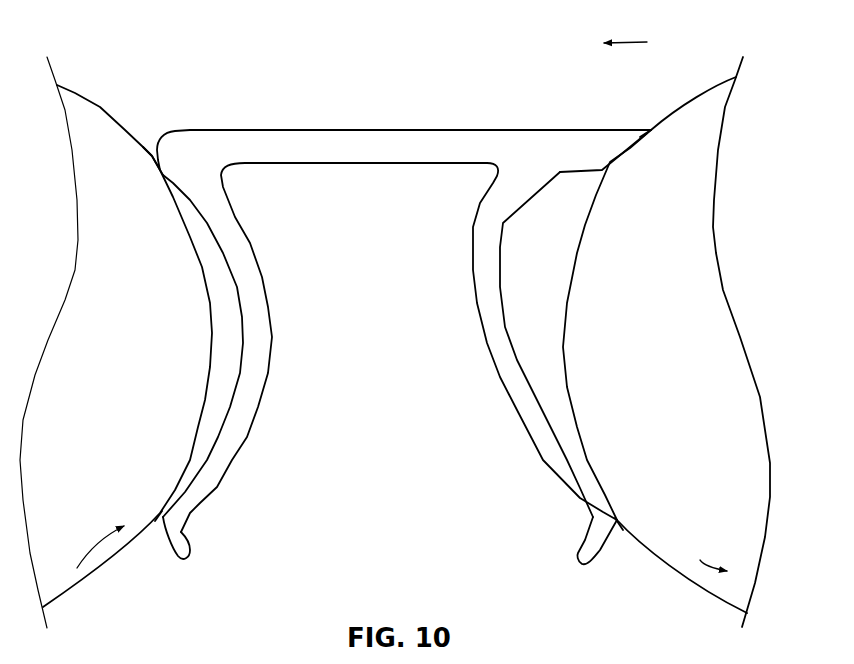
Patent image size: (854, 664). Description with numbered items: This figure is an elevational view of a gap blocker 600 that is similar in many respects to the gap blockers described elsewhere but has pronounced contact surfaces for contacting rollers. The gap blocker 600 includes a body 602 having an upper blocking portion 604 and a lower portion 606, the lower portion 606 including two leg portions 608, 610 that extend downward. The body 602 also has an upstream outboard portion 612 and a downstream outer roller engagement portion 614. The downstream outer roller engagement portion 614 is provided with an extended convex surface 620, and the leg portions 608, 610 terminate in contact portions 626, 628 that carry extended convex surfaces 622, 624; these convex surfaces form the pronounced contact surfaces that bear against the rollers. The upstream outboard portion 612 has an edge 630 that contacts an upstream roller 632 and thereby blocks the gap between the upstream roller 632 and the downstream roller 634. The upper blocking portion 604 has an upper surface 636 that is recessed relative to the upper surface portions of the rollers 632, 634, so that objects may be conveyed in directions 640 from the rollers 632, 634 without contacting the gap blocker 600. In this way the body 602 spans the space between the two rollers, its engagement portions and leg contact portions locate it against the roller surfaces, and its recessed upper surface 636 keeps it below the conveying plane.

The gap blocker 600 is at (395, 319).
The body 602 is at (485, 137).
The upper blocking portion 604 is at (307, 125).
The lower portion 606 is at (270, 560).
The leg portion 608 is at (232, 452).
The leg portion 610 is at (540, 433).
The upstream outboard portion 612 is at (579, 121).
The downstream outer roller engagement portion 614 is at (152, 127).
The extended convex surface 620 is at (146, 148).
The extended convex surface 622 is at (158, 515).
The extended convex surface 624 is at (619, 518).
The contact portion 626 is at (153, 533).
The contact portion 628 is at (618, 535).
The edge 630 is at (644, 135).
The upstream roller 632 is at (240, 102).
The downstream roller 634 is at (80, 107).
The upper surface 636 is at (393, 128).
The directions 640 is at (647, 42).